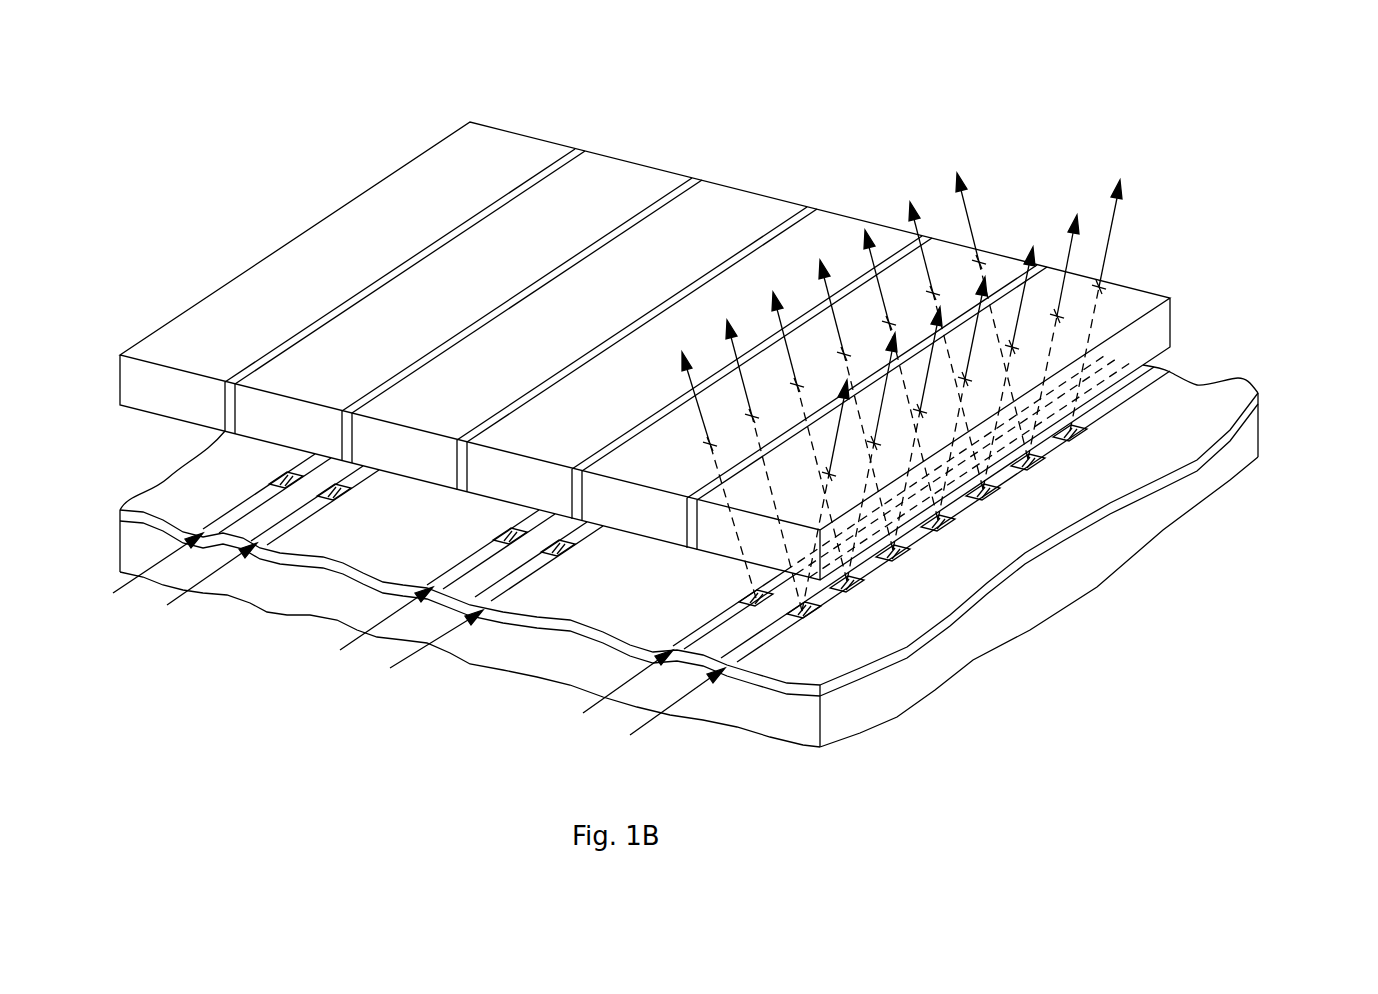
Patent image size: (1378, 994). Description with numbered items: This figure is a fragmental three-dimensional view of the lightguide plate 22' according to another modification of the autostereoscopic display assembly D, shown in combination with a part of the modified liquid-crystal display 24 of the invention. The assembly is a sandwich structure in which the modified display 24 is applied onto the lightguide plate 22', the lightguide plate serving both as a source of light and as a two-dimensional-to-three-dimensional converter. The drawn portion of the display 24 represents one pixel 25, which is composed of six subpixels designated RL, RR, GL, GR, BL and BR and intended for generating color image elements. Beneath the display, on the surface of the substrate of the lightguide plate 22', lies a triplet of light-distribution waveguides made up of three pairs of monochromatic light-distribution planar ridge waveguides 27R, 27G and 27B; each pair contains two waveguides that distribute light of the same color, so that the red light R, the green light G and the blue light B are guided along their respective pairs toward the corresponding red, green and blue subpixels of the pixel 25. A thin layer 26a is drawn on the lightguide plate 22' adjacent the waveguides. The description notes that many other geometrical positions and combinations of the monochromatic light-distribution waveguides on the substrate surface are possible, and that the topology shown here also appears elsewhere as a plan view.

The modified display 24 is at (377, 206).
The pixel 25 is at (544, 201).
The reflective layer 26a is at (1177, 395).
The lightguide plate 22' is at (740, 512).
The blue light-distribution planar ridge waveguides 27B is at (258, 517).
The green light-distribution planar ridge waveguides 27G is at (493, 572).
The red light-distribution planar ridge waveguides 27R is at (760, 622).
The autostereoscopic display assembly D is at (194, 214).
The blue light B is at (171, 593).
The green light G is at (397, 646).
The red light R is at (639, 717).